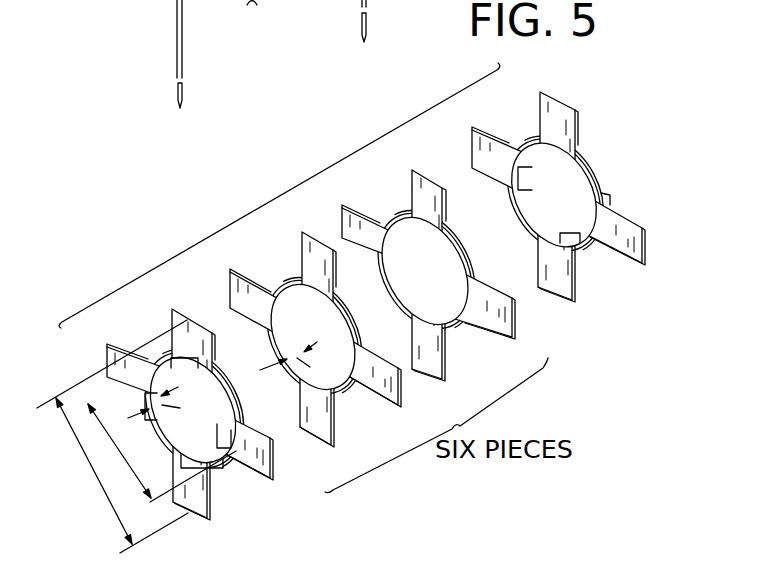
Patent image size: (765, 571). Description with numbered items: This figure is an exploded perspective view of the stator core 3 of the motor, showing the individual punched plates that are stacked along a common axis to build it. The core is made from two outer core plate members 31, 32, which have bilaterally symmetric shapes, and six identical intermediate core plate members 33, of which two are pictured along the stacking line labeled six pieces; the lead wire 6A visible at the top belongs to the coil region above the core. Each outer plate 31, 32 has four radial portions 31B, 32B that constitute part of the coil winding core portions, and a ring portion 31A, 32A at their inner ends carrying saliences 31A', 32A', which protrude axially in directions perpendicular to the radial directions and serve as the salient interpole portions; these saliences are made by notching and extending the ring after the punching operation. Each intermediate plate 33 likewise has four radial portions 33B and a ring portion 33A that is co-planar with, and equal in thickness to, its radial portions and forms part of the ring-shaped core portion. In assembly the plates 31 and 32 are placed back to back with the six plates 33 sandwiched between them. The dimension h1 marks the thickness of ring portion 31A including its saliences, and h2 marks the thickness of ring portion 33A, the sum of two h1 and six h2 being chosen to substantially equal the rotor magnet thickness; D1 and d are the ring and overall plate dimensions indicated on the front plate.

The stator core 3 is at (284, 193).
The coil lead wire 6A is at (200, 54).
The core plate member 31 is at (162, 414).
The ring portion 31A is at (203, 409).
The saliences 31A' is at (137, 407).
The radial portions 31B is at (187, 320).
The core plate member 32 is at (583, 192).
The ring portion 32A is at (572, 194).
The saliences 32A' is at (606, 205).
The radial portions 32B is at (543, 115).
The core plate member 33 is at (378, 310).
The ring portion 33A is at (358, 327).
The radial portions 33B is at (303, 250).
The thickness of ring portions 31A and 32A h1 is at (164, 407).
The thickness of ring portion 33A h2 is at (295, 361).
The diameter of core plate D1 is at (136, 411).
The overall dimension of core plate d is at (122, 475).